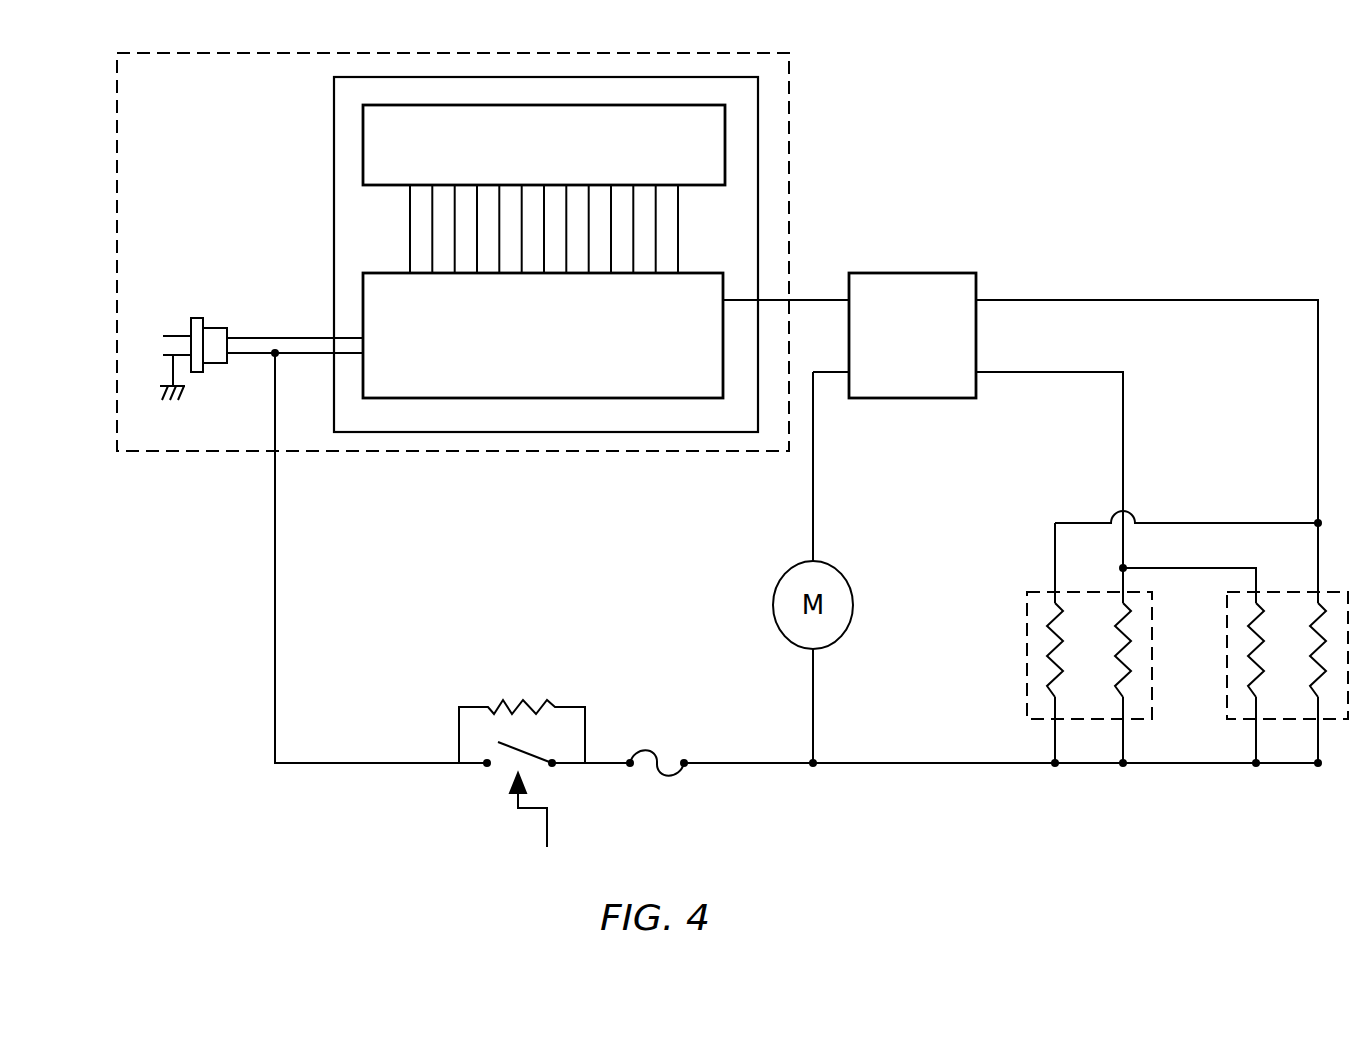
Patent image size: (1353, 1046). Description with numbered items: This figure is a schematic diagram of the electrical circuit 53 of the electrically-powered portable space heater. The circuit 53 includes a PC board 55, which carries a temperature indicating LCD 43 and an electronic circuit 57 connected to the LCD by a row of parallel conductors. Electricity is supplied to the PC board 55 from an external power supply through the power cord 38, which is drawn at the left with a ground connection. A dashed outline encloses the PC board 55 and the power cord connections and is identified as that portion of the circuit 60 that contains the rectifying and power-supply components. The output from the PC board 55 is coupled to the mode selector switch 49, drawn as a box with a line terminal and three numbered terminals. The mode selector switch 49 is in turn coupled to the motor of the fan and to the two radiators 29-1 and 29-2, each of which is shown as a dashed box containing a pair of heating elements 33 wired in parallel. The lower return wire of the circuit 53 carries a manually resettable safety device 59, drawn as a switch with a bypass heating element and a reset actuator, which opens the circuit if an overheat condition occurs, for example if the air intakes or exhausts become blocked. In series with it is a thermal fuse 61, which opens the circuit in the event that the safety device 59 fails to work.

The radiator 29-1 is at (1025, 618).
The radiator 29-2 is at (1227, 688).
The heating elements 33 is at (1058, 662).
The power cord 38 is at (212, 365).
The LCD 43 is at (418, 159).
The mode selector switch 49 is at (927, 346).
The electrical circuit 53 is at (1000, 170).
The PC board 55 is at (332, 228).
The electronic circuit 57 is at (411, 358).
The manually resettable safety device 59 is at (483, 775).
The portion of circuit 60 is at (208, 452).
The thermal fuse 61 is at (660, 777).